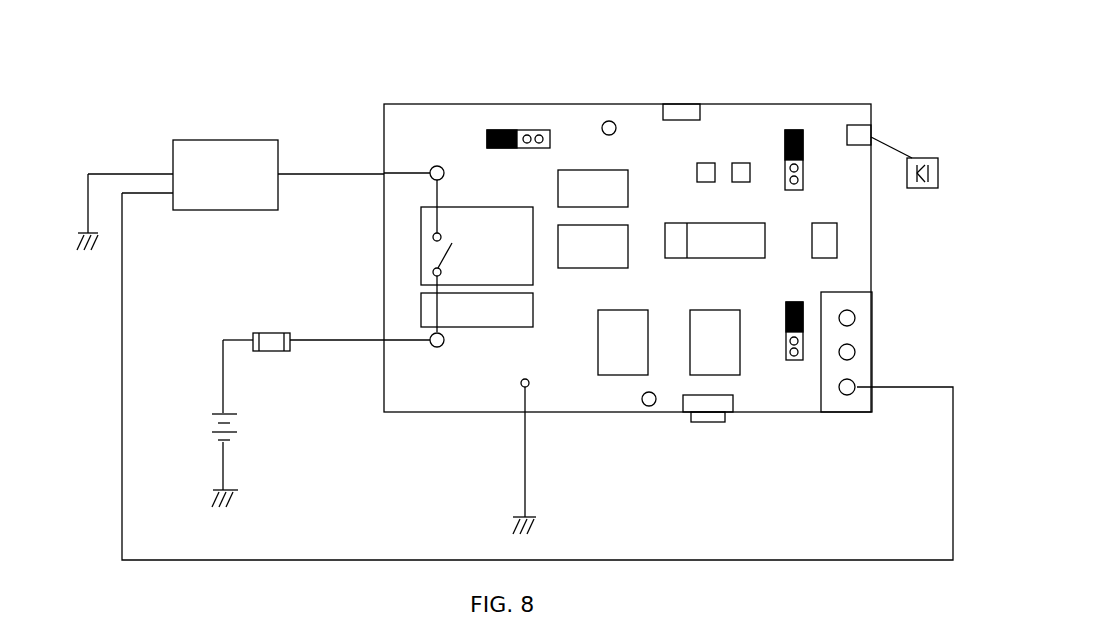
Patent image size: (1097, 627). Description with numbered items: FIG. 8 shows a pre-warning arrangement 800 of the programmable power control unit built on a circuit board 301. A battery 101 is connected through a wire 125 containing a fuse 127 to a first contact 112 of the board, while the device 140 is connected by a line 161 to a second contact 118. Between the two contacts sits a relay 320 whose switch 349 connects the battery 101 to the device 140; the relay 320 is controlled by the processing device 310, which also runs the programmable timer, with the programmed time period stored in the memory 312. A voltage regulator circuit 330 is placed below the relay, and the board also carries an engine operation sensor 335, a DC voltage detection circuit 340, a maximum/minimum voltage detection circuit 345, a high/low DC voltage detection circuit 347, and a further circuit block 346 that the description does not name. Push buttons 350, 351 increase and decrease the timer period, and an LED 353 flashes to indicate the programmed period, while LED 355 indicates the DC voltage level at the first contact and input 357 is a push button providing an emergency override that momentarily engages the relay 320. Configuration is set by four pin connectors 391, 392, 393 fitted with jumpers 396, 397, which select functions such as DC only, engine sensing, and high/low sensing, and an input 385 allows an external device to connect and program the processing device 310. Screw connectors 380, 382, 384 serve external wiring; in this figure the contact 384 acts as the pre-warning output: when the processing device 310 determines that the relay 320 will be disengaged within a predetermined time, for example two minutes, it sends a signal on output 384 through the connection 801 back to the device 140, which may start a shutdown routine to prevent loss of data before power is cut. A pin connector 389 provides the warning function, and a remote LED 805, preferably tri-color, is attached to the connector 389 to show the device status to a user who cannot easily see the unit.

The system 800 is at (225, 88).
The connection 801 is at (823, 560).
The device 140 is at (177, 195).
The power line 161 is at (327, 173).
The circuit board 301 is at (627, 258).
The second contact 118 is at (430, 167).
The relay 320 is at (477, 269).
The switch 349 is at (424, 257).
The voltage regulator circuit 330 is at (477, 310).
The first contact 112 is at (443, 344).
The wire 125 is at (237, 340).
The fuse 127 is at (272, 352).
The battery 101 is at (203, 423).
The four pin connector 393 is at (500, 130).
The four pin connector 391 is at (523, 150).
The light emitting diode 353 is at (615, 121).
The input 385 is at (682, 104).
The jumper 396 is at (800, 130).
The four pin connector 392 is at (803, 170).
The push button 350 is at (697, 172).
The push button 351 is at (740, 163).
The pin connector 389 is at (873, 133).
The remote LED 805 is at (917, 188).
The DC voltage detection circuit 340 is at (838, 240).
The module 346 is at (593, 188).
The engine operation sensor 335 is at (593, 246).
The processing device 310 is at (715, 240).
The memory 312 is at (677, 258).
The maximum/minimum voltage detection circuit 345 is at (623, 342).
The high/low DC voltage detection circuit 347 is at (715, 342).
The jumper 397 is at (786, 303).
The screw connector 380 is at (856, 318).
The screw connector 382 is at (856, 353).
The contact 384 is at (856, 392).
The LED 355 is at (643, 405).
The input 357 is at (710, 423).